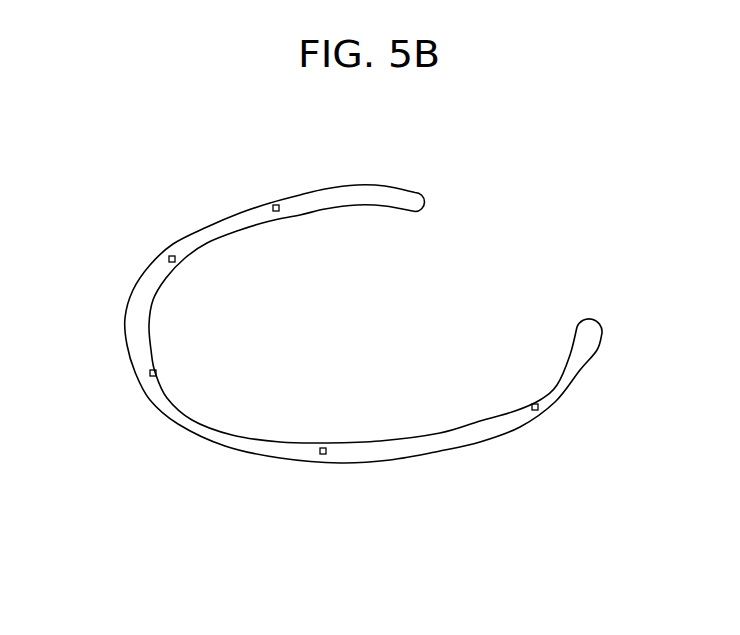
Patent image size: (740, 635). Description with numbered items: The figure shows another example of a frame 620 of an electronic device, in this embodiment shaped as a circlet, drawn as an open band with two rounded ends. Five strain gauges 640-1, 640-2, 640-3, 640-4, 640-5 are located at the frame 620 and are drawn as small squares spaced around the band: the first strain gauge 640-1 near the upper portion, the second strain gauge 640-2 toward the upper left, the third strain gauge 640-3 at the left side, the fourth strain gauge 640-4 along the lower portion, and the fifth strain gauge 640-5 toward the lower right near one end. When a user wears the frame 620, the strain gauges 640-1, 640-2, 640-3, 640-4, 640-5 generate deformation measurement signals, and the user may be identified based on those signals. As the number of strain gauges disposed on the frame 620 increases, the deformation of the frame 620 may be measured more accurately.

The frame 620 is at (413, 193).
The strain gauge 640-1 is at (276, 204).
The strain gauge 640-2 is at (168, 257).
The strain gauge 640-3 is at (150, 376).
The strain gauge 640-4 is at (321, 455).
The strain gauge 640-5 is at (538, 410).